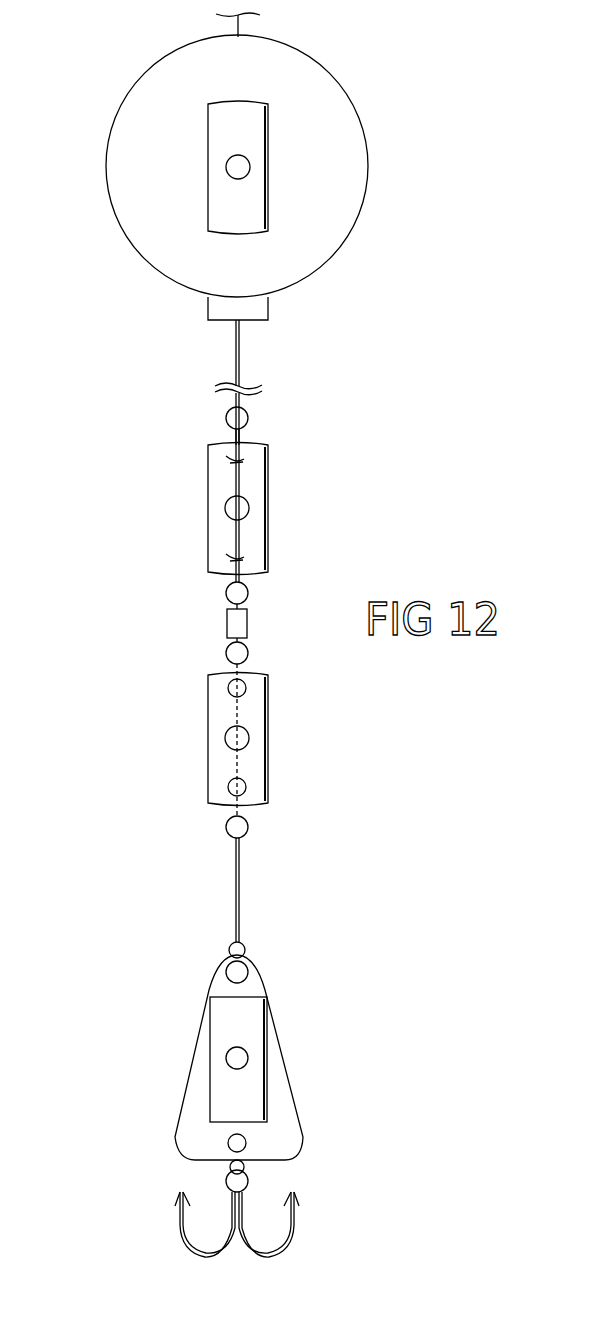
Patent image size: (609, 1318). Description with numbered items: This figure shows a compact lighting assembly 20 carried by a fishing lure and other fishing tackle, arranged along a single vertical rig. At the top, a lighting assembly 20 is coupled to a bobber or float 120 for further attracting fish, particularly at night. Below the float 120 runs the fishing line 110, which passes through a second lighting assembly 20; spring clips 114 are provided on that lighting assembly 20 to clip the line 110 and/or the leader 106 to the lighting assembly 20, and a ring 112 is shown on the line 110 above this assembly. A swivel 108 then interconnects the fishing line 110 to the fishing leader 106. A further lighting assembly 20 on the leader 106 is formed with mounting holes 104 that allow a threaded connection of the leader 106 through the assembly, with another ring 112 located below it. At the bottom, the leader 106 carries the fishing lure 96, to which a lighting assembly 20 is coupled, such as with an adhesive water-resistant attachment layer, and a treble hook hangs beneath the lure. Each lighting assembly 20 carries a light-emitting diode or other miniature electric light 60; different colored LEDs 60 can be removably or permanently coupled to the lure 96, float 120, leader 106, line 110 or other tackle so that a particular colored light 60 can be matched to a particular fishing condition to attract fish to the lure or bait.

The bobber or float 120 is at (118, 186).
The lighting assembly 20 is at (262, 128).
The fishing line 110 is at (240, 342).
The ring 112 is at (226, 421).
The spring clips 114 is at (226, 461).
The light-emitting diode 60 is at (226, 511).
The swivel 108 is at (227, 627).
The mounting holes 104 is at (247, 688).
The fishing leader 106 is at (240, 912).
The fishing lure 96 is at (200, 1058).